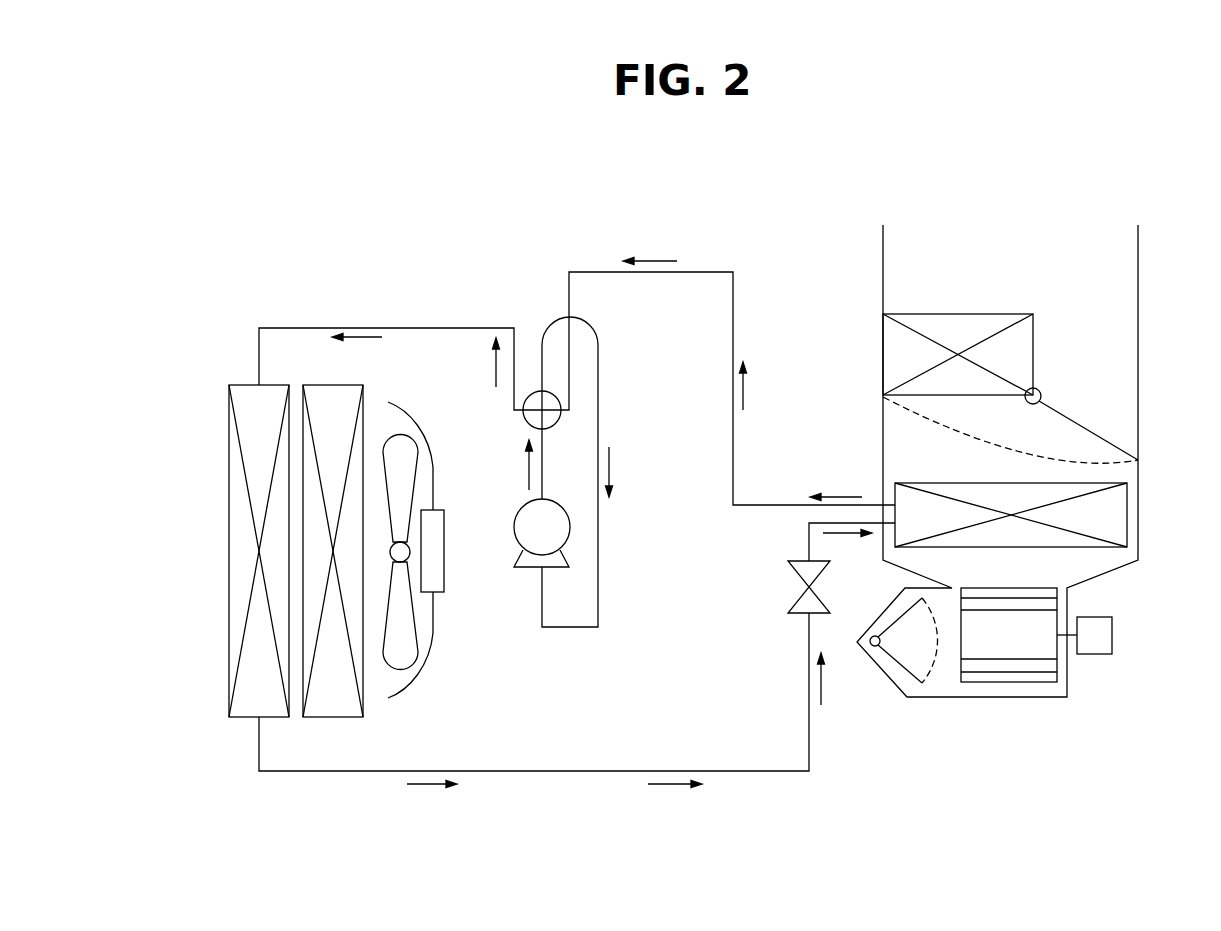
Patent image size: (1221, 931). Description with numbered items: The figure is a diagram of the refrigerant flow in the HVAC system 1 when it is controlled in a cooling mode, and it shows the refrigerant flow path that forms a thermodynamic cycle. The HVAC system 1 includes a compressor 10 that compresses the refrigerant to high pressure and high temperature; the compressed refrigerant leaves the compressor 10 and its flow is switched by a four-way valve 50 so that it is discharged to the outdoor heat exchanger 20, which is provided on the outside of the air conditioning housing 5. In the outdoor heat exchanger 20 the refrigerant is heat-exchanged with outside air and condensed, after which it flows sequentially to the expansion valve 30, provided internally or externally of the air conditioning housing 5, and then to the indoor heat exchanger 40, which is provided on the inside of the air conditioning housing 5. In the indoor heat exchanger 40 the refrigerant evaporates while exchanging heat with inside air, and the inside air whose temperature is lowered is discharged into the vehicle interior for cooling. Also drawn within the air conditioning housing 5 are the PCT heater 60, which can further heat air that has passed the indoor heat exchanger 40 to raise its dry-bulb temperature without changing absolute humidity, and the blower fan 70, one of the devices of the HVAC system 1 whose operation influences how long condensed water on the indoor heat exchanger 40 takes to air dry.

The HVAC system 1 is at (245, 297).
The air conditioning housing 5 is at (1138, 320).
The compressor 10 is at (526, 505).
The outdoor heat exchanger 20 is at (229, 448).
The expansion valve 30 is at (797, 578).
The indoor heat exchanger 40 is at (1127, 513).
The 4-way valve 50 is at (531, 395).
The PCT heater 60 is at (967, 314).
The blower fan 70 is at (1010, 684).